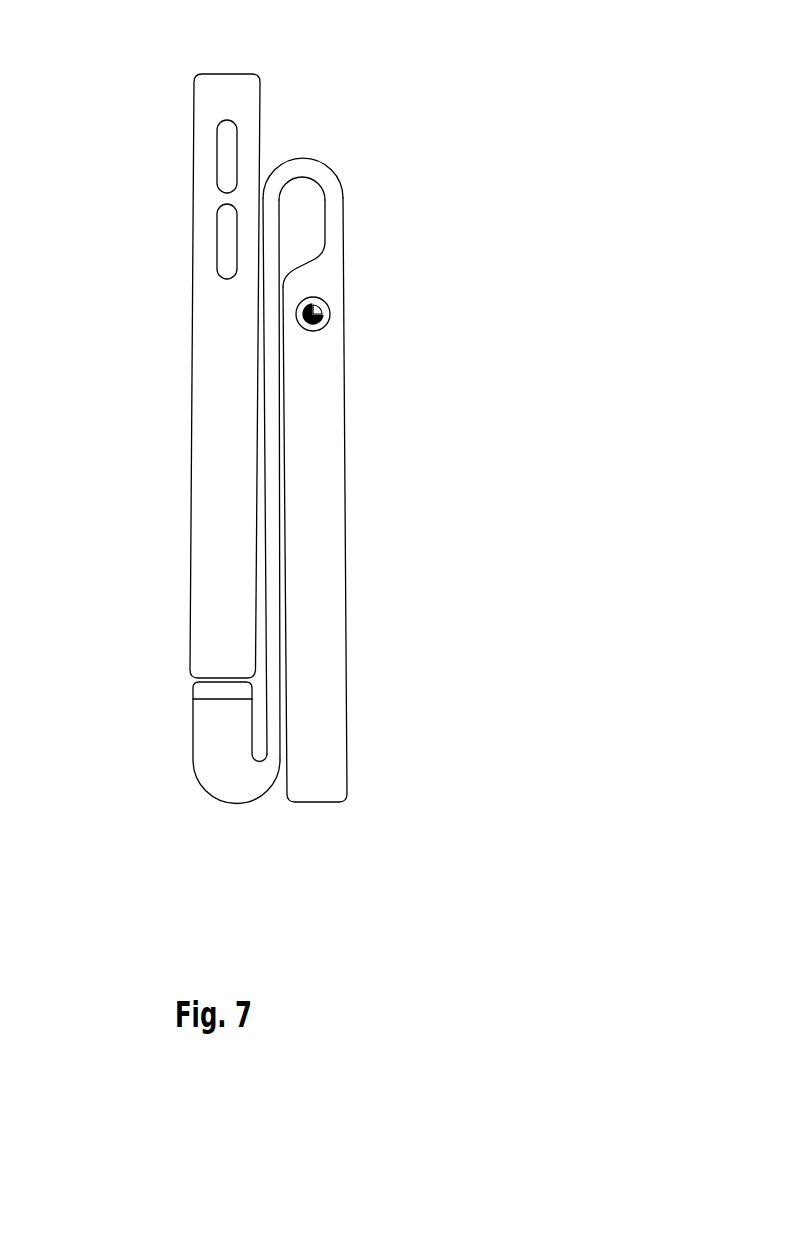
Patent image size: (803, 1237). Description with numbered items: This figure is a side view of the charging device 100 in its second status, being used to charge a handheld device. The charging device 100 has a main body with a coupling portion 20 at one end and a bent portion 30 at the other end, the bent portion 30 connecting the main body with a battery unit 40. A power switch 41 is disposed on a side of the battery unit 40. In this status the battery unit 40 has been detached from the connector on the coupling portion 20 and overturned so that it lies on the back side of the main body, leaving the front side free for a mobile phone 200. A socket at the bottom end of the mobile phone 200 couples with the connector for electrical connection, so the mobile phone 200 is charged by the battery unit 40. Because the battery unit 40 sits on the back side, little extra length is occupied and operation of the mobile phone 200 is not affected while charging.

The charging device 100 is at (386, 92).
The mobile phone 200 is at (222, 413).
The bent portion 30 is at (302, 175).
The battery unit 40 is at (318, 462).
The power switch 41 is at (331, 315).
The coupling portion 20 is at (222, 732).